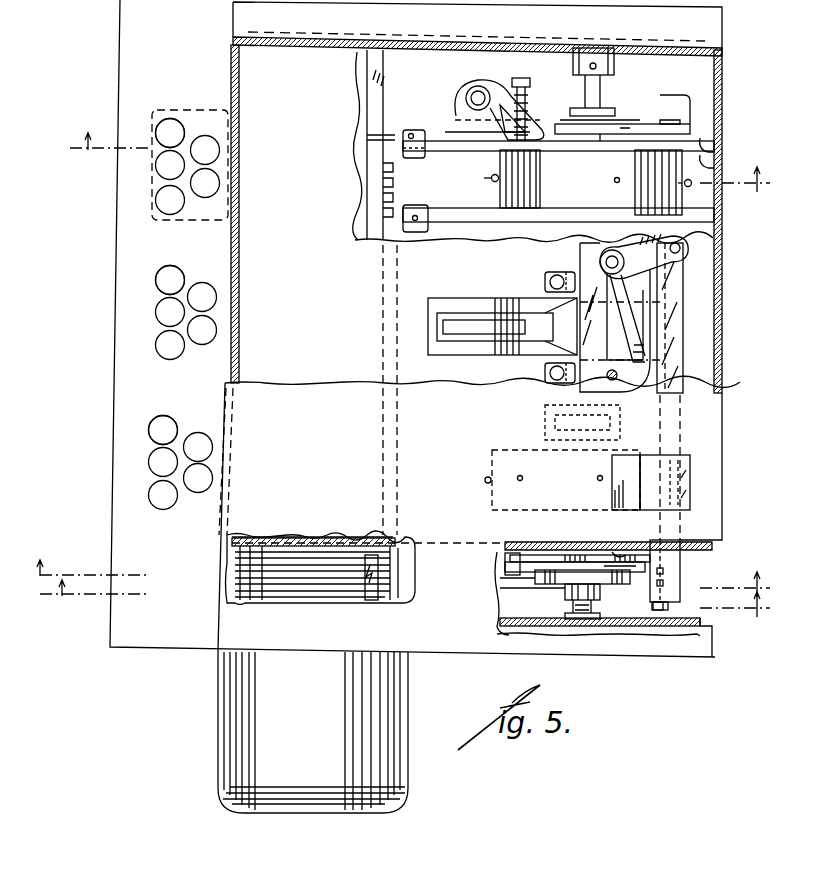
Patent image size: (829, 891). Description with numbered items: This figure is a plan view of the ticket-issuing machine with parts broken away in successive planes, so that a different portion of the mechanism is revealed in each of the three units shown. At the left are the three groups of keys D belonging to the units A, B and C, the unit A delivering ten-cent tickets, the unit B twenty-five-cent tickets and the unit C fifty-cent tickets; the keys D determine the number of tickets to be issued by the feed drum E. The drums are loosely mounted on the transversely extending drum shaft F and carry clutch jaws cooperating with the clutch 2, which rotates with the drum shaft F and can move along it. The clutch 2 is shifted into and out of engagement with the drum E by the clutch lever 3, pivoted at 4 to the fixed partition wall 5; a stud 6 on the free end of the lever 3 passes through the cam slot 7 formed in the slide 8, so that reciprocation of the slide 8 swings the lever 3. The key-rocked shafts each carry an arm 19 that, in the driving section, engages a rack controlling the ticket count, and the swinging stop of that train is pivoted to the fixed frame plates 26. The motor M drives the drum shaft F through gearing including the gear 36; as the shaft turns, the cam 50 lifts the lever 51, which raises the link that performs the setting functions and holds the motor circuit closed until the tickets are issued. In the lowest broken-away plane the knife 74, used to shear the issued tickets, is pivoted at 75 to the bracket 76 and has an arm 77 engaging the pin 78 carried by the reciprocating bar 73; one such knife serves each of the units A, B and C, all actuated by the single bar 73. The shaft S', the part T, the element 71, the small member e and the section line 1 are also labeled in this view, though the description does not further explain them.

The section line / contact 1 is at (600, 150).
The clutch 2 is at (623, 98).
The clutch lever 3 is at (552, 122).
The pivot 4 is at (752, 165).
The fixed partition wall 5 is at (714, 140).
The stud 6 is at (478, 85).
The cam slot 7 is at (495, 130).
The slide 8 is at (445, 125).
The arm 19 is at (400, 548).
The fixed frame plates 26 is at (330, 555).
The gear 36 is at (622, 555).
The cam 50 is at (546, 584).
The lever 51 is at (538, 555).
The foot 71 is at (665, 606).
The bar 73 is at (683, 323).
The knife 74 is at (640, 292).
The pivot 75 is at (640, 297).
The bracket 76 is at (580, 260).
The arm 77 is at (645, 268).
The pin 78 is at (680, 248).
The unit A is at (174, 163).
The unit B is at (170, 313).
The unit C is at (173, 463).
The keys D is at (205, 138).
The feed drum E is at (505, 452).
The knob e is at (485, 178).
The drum shaft F is at (575, 528).
The motor M is at (313, 731).
The block T is at (686, 490).
The shaft S' is at (401, 318).